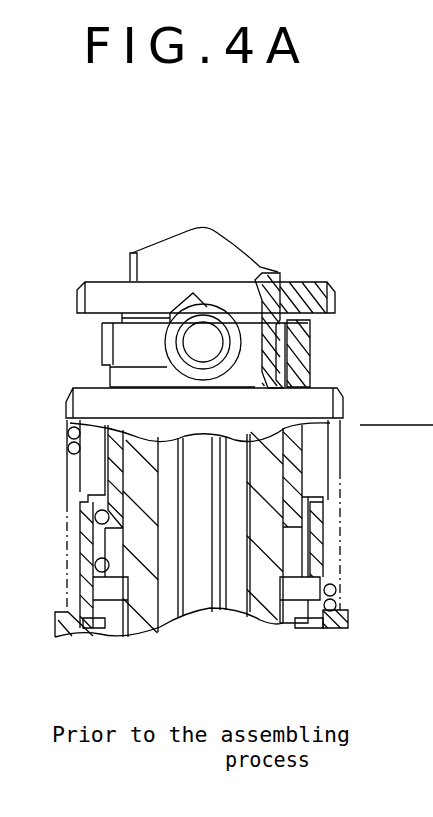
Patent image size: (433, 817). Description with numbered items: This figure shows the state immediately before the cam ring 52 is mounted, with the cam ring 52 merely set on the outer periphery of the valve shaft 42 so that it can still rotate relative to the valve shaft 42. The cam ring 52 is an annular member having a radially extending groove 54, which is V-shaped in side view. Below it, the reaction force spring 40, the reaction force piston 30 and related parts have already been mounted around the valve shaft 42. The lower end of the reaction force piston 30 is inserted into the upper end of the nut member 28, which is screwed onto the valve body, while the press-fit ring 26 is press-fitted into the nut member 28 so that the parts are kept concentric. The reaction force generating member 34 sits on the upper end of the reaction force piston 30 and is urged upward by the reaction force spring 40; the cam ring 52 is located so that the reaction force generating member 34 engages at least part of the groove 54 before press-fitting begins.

The press-fit ring 26 is at (291, 615).
The nut member 28 is at (348, 616).
The reaction force piston 30 is at (338, 388).
The reaction force generating member 34 is at (207, 340).
The reaction force spring 40 is at (333, 520).
The valve shaft 42 is at (193, 247).
The cam ring 52 is at (107, 300).
The groove 54 is at (183, 303).